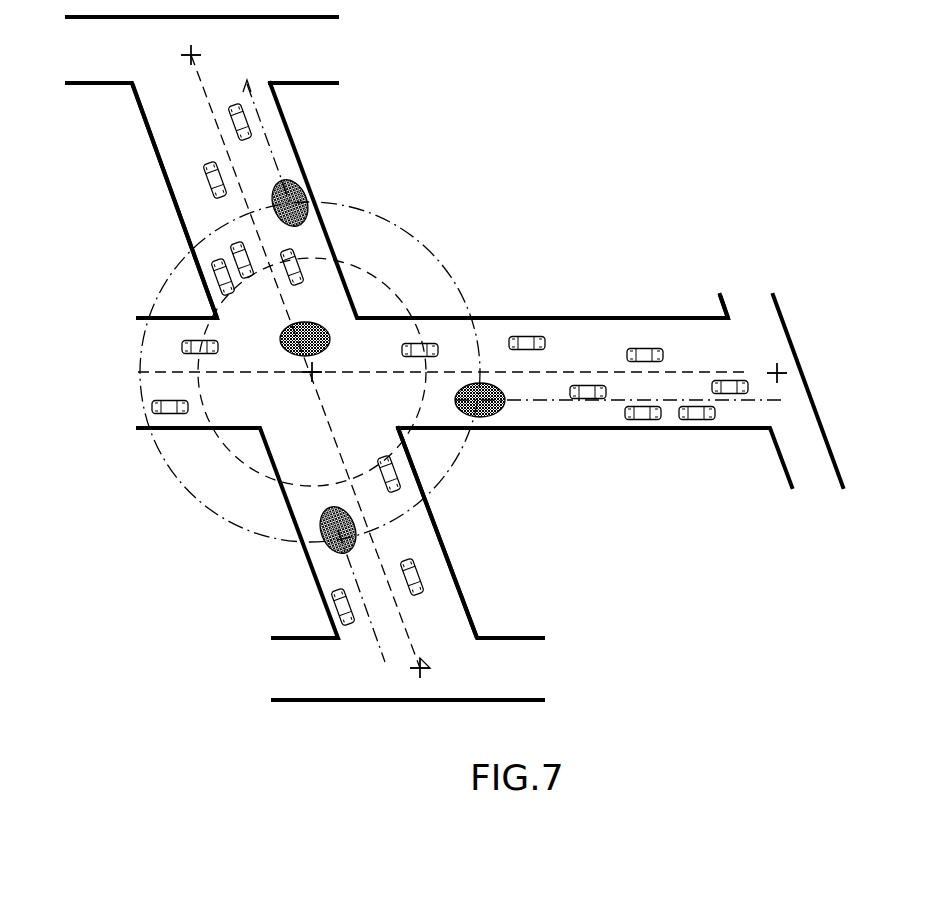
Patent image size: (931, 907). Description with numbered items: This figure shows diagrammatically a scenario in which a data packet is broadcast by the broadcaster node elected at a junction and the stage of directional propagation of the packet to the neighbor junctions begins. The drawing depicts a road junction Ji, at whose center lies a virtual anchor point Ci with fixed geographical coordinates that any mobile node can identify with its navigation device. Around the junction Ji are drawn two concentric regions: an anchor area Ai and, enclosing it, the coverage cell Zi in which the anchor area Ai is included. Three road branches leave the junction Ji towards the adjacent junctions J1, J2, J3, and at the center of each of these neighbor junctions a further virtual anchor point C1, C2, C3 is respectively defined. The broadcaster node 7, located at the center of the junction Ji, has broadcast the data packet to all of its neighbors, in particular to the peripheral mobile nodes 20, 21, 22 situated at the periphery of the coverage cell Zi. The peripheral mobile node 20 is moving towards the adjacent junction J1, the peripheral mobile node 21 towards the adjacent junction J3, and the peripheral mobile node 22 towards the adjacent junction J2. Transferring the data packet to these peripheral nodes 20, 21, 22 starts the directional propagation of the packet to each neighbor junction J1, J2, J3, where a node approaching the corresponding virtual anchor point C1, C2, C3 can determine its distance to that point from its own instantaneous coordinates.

The broadcaster node 7 is at (280, 339).
The peripheral mobile node 20 is at (292, 226).
The peripheral mobile node 21 is at (466, 410).
The peripheral mobile node 22 is at (320, 527).
The coverage cell Zi is at (308, 200).
The anchor area Ai is at (378, 282).
The virtual anchor point Ci is at (316, 376).
The junction Ji is at (150, 497).
The junction J1 is at (117, 109).
The junction J2 is at (488, 620).
The junction J3 is at (701, 299).
The virtual anchor point C1 is at (196, 58).
The virtual anchor point C2 is at (425, 672).
The virtual anchor point C3 is at (772, 370).